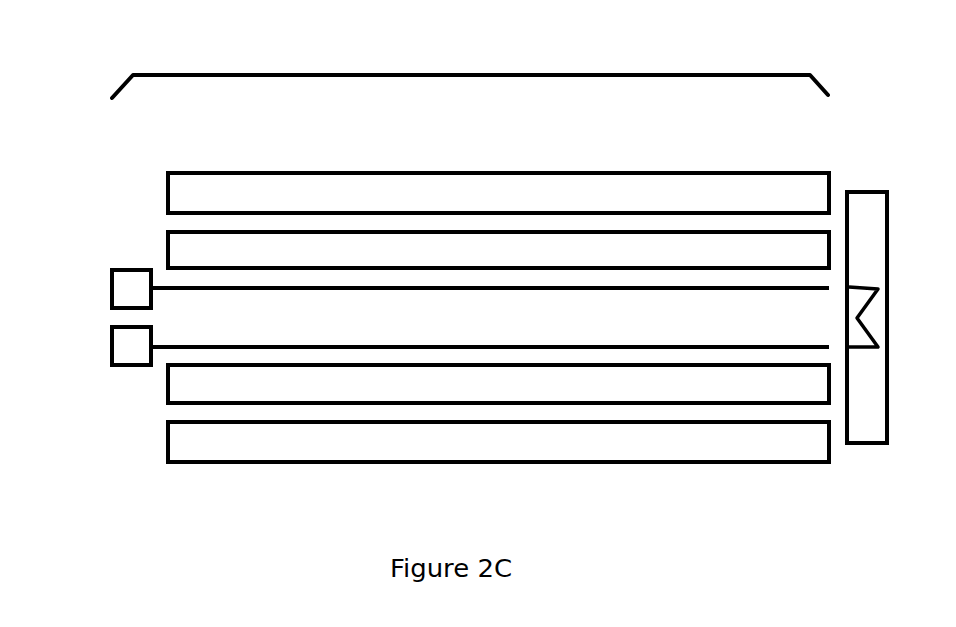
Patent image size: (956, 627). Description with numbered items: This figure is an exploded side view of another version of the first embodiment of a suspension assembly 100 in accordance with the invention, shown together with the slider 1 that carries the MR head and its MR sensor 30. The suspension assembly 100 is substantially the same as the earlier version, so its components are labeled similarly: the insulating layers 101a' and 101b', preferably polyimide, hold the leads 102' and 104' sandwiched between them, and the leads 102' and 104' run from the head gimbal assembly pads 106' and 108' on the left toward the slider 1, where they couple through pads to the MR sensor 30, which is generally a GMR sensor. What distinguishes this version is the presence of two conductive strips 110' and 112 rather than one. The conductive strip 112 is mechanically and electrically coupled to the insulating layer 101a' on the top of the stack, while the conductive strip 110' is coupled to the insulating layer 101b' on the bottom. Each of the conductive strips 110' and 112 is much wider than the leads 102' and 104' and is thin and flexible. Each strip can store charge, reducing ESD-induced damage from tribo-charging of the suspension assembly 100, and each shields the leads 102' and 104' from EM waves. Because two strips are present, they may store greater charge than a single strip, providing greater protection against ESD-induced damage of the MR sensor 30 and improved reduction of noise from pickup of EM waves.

The suspension assembly 100 is at (470, 75).
The conductive strip 112 is at (640, 172).
The insulating layer 101a' is at (498, 192).
The lead 102' is at (490, 214).
The lead 104' is at (490, 420).
The head gimbal assembly pad 106' is at (91, 262).
The head gimbal assembly pad 108' is at (100, 319).
The insulating layer 101b' is at (463, 410).
The conductive strip 110' is at (498, 467).
The MR sensor 30 is at (867, 260).
The slider 1 is at (870, 443).